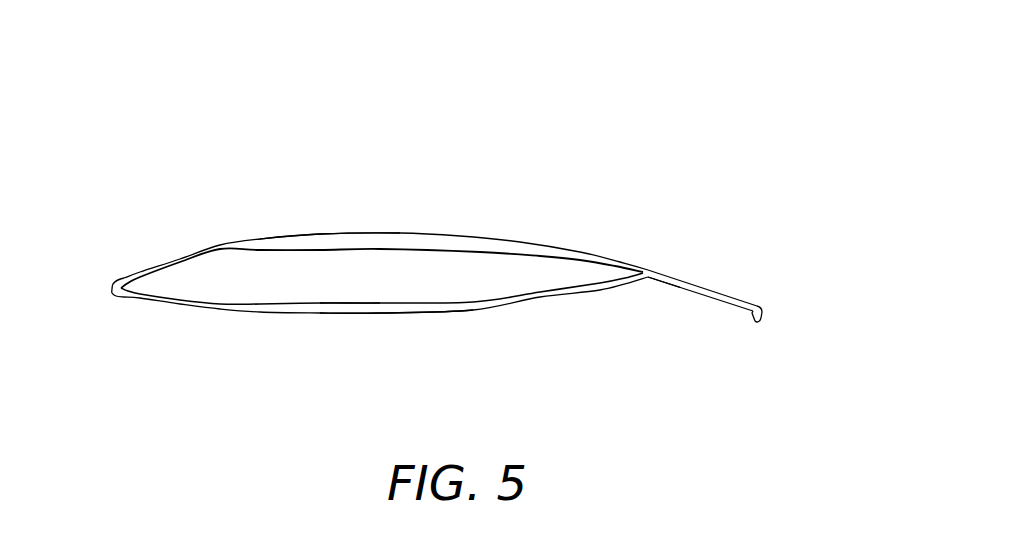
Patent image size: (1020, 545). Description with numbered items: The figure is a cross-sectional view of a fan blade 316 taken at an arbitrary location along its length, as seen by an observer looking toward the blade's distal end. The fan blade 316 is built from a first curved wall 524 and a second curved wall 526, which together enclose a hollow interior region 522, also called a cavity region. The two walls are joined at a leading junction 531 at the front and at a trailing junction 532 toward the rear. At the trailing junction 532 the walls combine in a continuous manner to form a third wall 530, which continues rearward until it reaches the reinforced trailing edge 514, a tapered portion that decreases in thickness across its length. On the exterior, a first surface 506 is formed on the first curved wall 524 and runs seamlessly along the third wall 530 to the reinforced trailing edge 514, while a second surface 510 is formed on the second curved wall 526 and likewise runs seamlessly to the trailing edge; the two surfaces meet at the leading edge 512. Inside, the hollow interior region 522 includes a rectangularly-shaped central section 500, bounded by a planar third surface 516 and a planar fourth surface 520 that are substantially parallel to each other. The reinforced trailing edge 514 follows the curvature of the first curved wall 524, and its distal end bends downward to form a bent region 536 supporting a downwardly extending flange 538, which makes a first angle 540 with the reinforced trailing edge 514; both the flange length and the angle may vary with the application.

The fan blade 316 is at (535, 143).
The rectangularly-shaped central section 500 is at (382, 276).
The first surface 506 is at (380, 234).
The second surface 510 is at (470, 310).
The leading edge 512 is at (111, 288).
The reinforced trailing edge 514 is at (728, 283).
The planar third surface 516 is at (452, 252).
The planar fourth surface 520 is at (288, 305).
The hollow interior region 522 is at (338, 284).
The first curved wall 524 is at (319, 244).
The second curved wall 526 is at (365, 309).
The third wall 530 is at (672, 275).
The leading junction 531 is at (115, 293).
The trailing junction 532 is at (655, 277).
The bent region 536 is at (762, 305).
The downwardly extending flange 538 is at (762, 320).
The first angle 540 is at (748, 312).